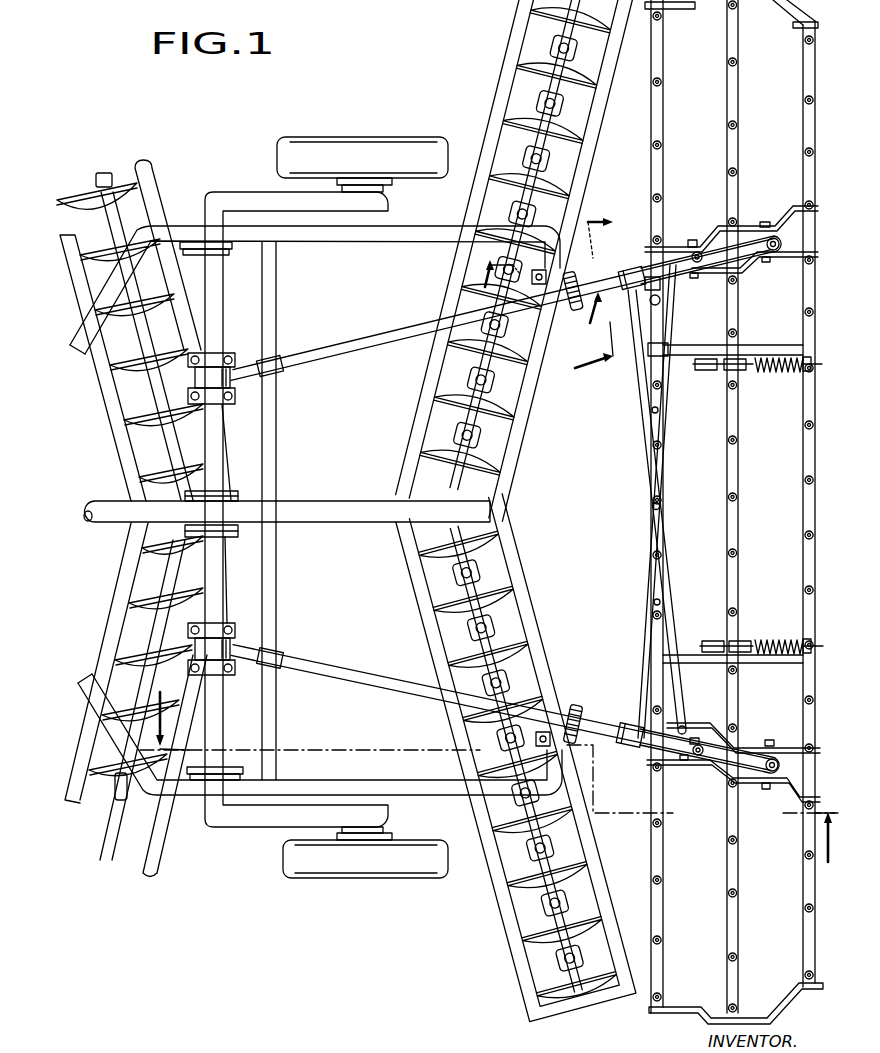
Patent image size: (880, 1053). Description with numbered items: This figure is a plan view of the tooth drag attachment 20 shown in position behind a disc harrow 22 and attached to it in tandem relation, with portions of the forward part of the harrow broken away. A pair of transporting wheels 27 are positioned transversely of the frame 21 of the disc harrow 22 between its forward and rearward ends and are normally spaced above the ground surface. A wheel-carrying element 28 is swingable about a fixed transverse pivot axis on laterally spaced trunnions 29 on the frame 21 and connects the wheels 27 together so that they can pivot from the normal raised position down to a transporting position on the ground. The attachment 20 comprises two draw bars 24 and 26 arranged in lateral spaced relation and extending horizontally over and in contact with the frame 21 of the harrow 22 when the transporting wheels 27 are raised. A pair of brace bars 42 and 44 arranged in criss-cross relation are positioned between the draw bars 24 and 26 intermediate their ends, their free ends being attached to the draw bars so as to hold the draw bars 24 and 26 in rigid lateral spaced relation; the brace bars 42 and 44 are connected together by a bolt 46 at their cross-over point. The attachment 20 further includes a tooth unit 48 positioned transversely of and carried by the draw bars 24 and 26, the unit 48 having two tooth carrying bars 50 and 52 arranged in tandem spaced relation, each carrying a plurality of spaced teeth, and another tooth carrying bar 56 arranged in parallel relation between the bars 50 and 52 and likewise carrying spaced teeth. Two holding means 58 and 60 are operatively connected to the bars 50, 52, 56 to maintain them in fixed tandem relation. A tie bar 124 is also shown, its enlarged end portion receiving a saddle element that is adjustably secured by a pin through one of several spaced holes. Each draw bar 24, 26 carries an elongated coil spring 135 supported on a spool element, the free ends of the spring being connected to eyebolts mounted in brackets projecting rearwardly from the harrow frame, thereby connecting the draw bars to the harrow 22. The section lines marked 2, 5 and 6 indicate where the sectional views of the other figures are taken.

The tooth drag attachment 20 is at (622, 487).
The frame 21 is at (413, 232).
The disc harrow 22 is at (457, 115).
The draw bar 24 is at (392, 650).
The draw bar 26 is at (384, 330).
The transporting wheels 27 is at (355, 160).
The wheel-carrying element 28 is at (217, 726).
The trunnions 29 is at (173, 238).
The brace bar 42 is at (640, 625).
The brace bar 44 is at (655, 686).
The bolt 46 is at (655, 508).
The tooth unit 48 is at (713, 512).
The tooth carrying bar 50 is at (657, 173).
The tooth carrying bar 52 is at (803, 135).
The tooth carrying bar 56 is at (730, 163).
The holding means 58 is at (712, 778).
The holding means 60 is at (708, 228).
The tie bar 124 is at (773, 378).
The coil spring 135 is at (570, 302).
The section line 2 is at (497, 789).
The section line 5 is at (534, 300).
The section line 6 is at (604, 305).